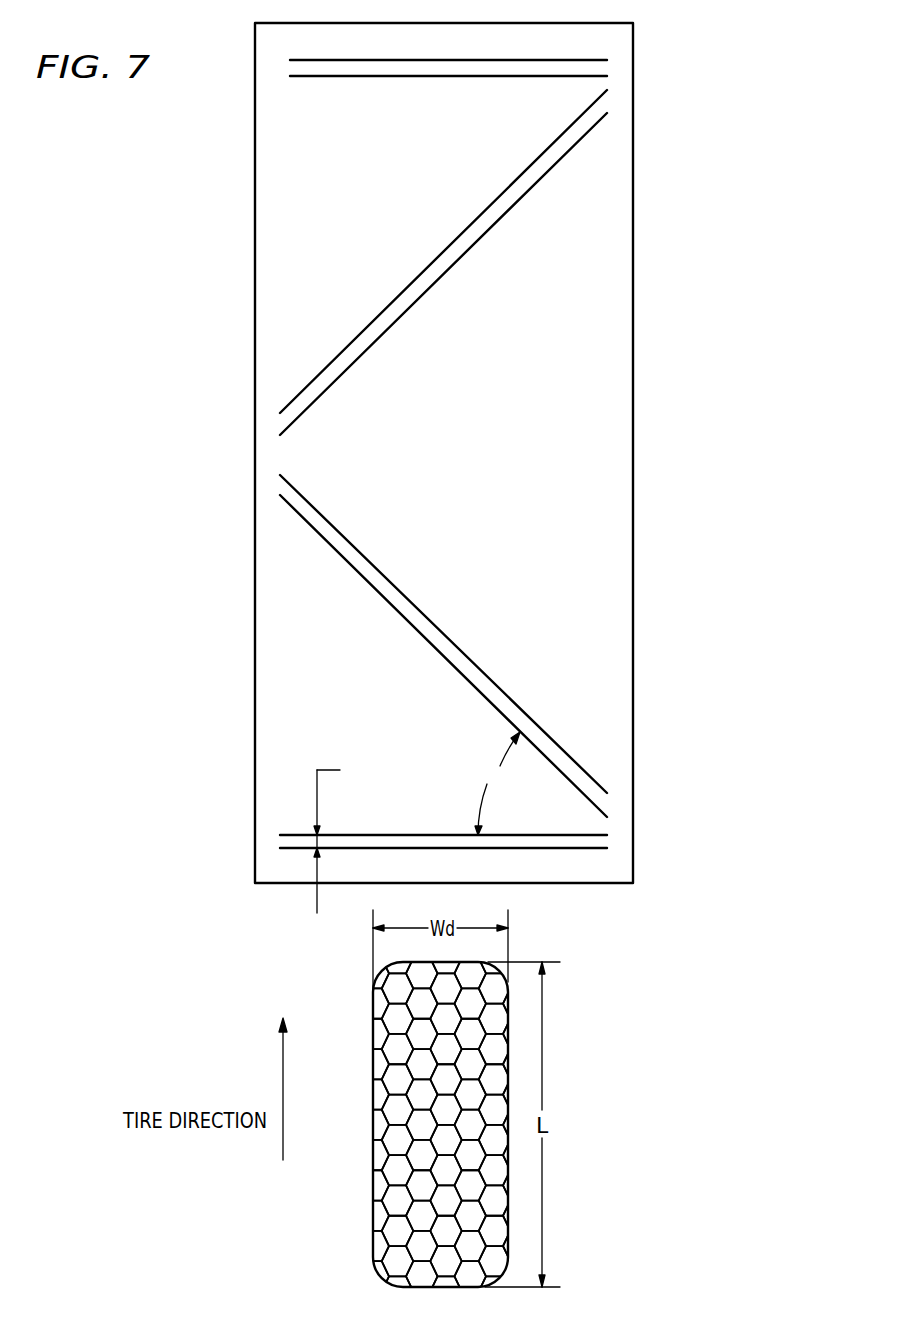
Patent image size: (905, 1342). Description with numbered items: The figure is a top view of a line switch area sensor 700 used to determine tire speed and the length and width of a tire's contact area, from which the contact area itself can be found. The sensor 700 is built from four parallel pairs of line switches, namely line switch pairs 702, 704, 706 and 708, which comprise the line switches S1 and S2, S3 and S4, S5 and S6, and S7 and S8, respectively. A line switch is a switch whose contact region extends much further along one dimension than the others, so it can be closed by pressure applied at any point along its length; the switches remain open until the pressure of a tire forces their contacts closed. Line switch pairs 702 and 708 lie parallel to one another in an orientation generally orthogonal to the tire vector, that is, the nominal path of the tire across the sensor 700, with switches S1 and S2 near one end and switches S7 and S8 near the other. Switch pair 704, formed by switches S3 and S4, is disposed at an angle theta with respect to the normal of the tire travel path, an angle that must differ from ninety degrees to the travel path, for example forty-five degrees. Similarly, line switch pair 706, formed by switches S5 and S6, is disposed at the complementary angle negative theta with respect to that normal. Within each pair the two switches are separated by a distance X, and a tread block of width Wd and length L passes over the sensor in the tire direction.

The line switch area sensor 700 is at (752, 330).
The line switch pair 702 is at (452, 848).
The line switch pair 704 is at (482, 649).
The line switch pair 706 is at (482, 260).
The line switch pair 708 is at (449, 70).
The line switch S1 is at (292, 848).
The line switch S2 is at (292, 835).
The line switch S3 is at (356, 572).
The line switch S4 is at (360, 551).
The line switch S5 is at (425, 295).
The line switch S6 is at (414, 281).
The line switch S7 is at (292, 76).
The line switch S8 is at (292, 60).